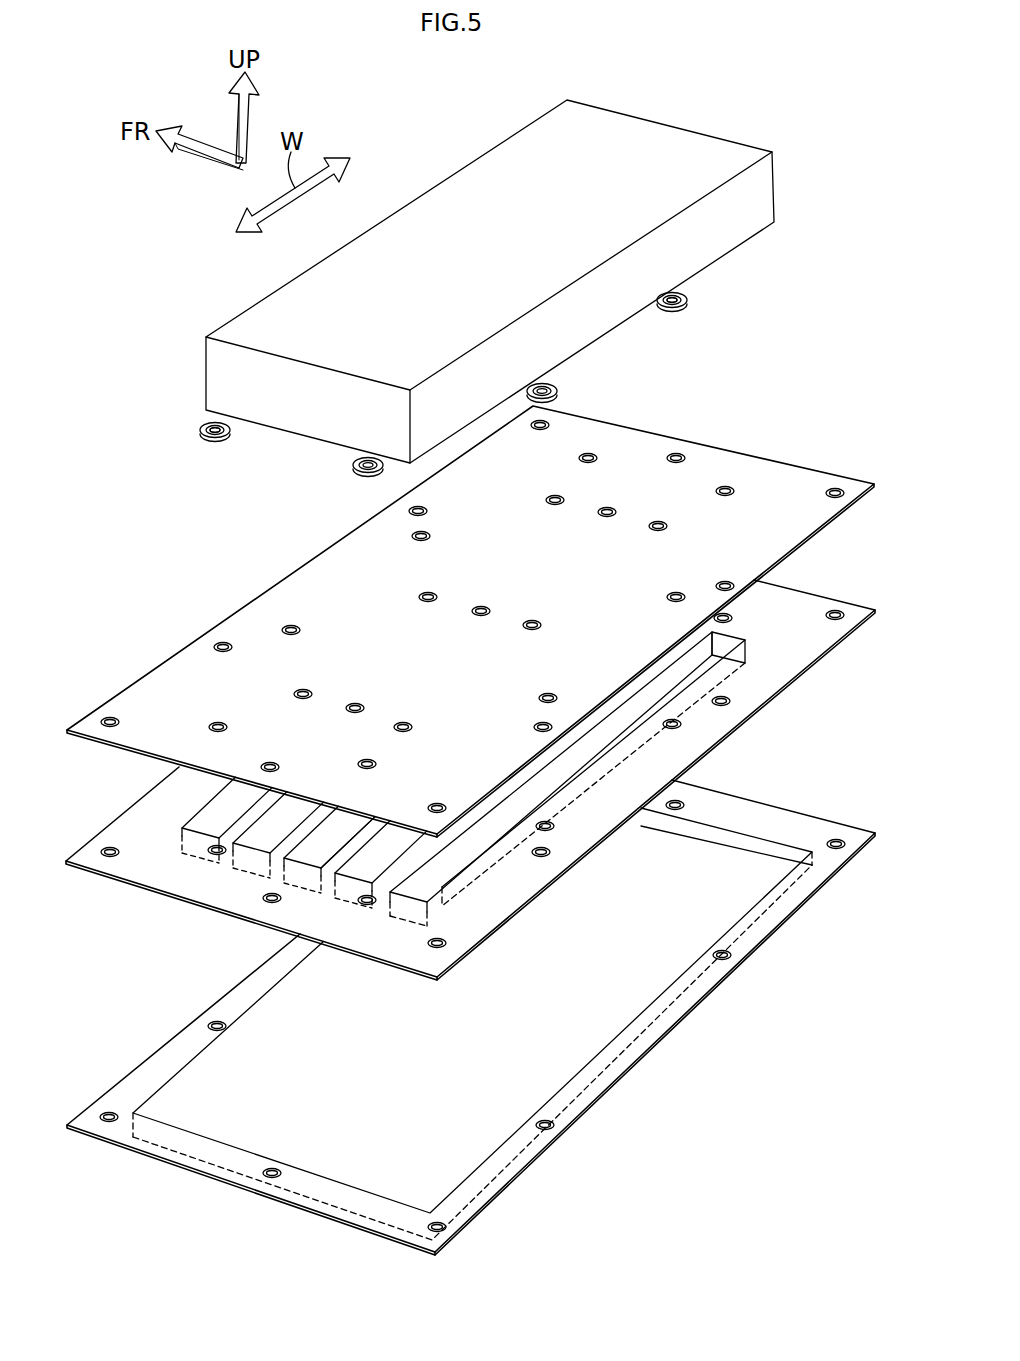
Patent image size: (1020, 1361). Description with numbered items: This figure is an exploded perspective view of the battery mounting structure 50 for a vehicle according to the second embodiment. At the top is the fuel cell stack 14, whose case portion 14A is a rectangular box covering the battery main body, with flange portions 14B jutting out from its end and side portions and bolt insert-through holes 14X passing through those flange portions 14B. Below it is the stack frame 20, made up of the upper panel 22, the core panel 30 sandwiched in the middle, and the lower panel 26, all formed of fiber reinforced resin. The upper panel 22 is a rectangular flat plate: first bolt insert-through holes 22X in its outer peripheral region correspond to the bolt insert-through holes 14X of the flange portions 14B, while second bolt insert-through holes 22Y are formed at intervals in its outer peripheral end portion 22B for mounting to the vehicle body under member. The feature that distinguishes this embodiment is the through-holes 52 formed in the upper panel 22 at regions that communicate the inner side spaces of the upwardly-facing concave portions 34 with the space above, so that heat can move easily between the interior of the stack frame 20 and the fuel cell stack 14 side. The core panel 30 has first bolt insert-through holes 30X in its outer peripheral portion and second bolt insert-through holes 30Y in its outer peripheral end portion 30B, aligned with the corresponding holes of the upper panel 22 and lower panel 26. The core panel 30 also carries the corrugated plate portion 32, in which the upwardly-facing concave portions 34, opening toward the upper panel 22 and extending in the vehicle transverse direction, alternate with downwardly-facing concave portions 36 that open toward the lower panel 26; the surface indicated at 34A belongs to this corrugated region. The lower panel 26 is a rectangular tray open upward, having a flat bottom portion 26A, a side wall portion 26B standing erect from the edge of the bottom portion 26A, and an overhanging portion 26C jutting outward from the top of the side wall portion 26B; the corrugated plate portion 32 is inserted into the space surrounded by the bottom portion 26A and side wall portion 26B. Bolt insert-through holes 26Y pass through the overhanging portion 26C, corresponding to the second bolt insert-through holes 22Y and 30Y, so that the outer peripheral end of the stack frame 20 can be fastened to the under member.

The fuel cell stack 14 is at (691, 105).
The case portion 14A is at (733, 145).
The flange portions 14B is at (690, 301).
The bolt insert-through holes 14X is at (660, 299).
The stack frame 20 is at (813, 389).
The upper panel 22 is at (742, 432).
The outer peripheral end portion 22B is at (778, 472).
The first bolt insert-through holes 22X is at (675, 592).
The second bolt insert-through holes 22Y is at (727, 580).
The through-holes 52 is at (560, 495).
The core panel 30 is at (473, 780).
The outer peripheral end portion 30B is at (808, 648).
The first bolt insert-through holes 30X is at (670, 714).
The second bolt insert-through holes 30Y is at (722, 694).
The corrugated plate portion 32 is at (467, 881).
The upwardly-facing concave portions 34 is at (412, 864).
The fin side face 34A is at (337, 848).
The downwardly-facing concave portions 36 is at (440, 905).
The lower panel 26 is at (611, 1113).
The bottom portion 26A is at (775, 885).
The side wall portion 26B is at (752, 850).
The overhanging portion 26C is at (800, 832).
The bolt insert-through holes 26Y is at (720, 950).
The battery mounting structure for a vehicle 50 is at (98, 952).